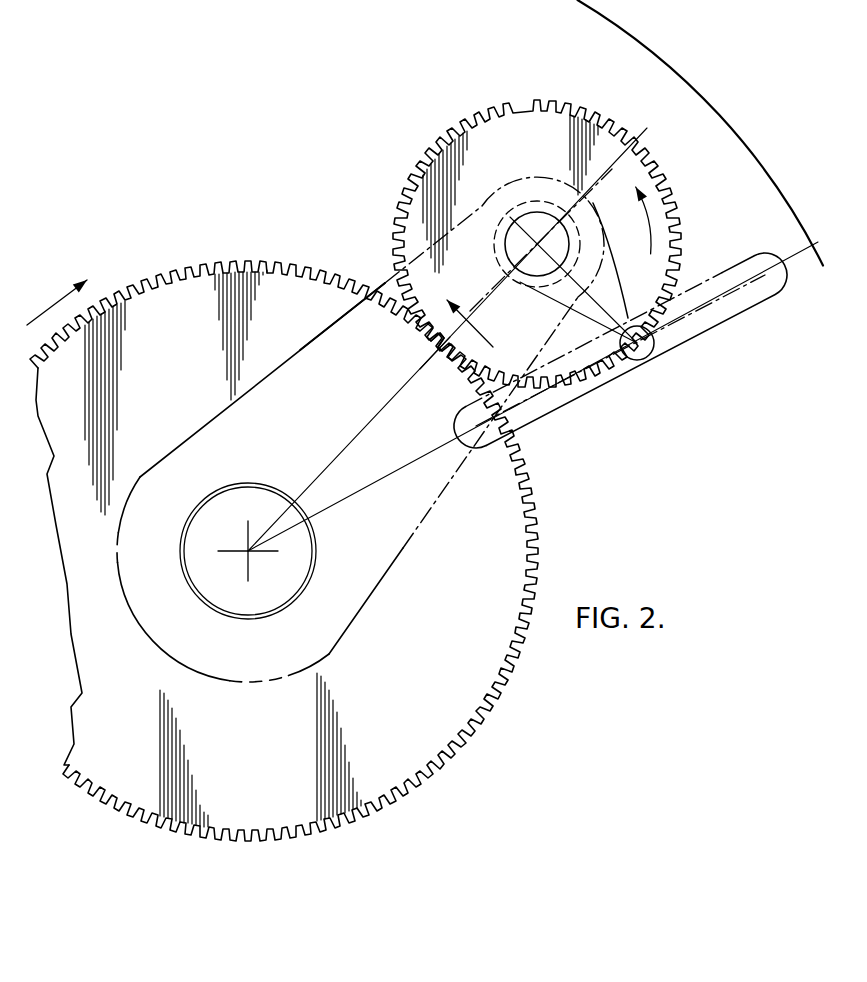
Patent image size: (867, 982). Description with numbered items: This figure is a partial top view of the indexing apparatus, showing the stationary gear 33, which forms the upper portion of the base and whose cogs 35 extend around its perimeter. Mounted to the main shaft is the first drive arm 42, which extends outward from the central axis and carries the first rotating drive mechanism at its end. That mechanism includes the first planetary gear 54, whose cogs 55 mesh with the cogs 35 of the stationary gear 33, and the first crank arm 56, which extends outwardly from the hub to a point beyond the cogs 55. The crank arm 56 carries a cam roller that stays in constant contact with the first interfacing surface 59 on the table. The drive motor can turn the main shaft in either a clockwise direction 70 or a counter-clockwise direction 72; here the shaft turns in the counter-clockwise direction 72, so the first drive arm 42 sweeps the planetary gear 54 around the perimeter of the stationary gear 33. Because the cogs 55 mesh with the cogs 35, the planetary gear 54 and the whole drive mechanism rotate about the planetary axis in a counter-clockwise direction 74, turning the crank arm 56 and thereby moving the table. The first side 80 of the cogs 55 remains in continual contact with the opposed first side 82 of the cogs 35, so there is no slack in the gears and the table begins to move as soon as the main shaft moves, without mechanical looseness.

The stationary gear 33 is at (415, 694).
The first planetary gear 54 is at (543, 158).
The first drive arm 42 is at (443, 500).
The first interfacing surface 59 is at (731, 272).
The first crank arm 56 is at (636, 314).
The cogs of the first planetary gear 55 is at (457, 340).
The cogs of the stationary gear 35 is at (437, 350).
The first side of the cogs of the first planetary gear 80 is at (385, 282).
The opposed first side of the cogs of the stationary gear 82 is at (437, 362).
The clockwise direction 70 is at (53, 302).
The counter-clockwise direction 72 is at (480, 324).
The counter-clockwise direction 74 is at (643, 220).